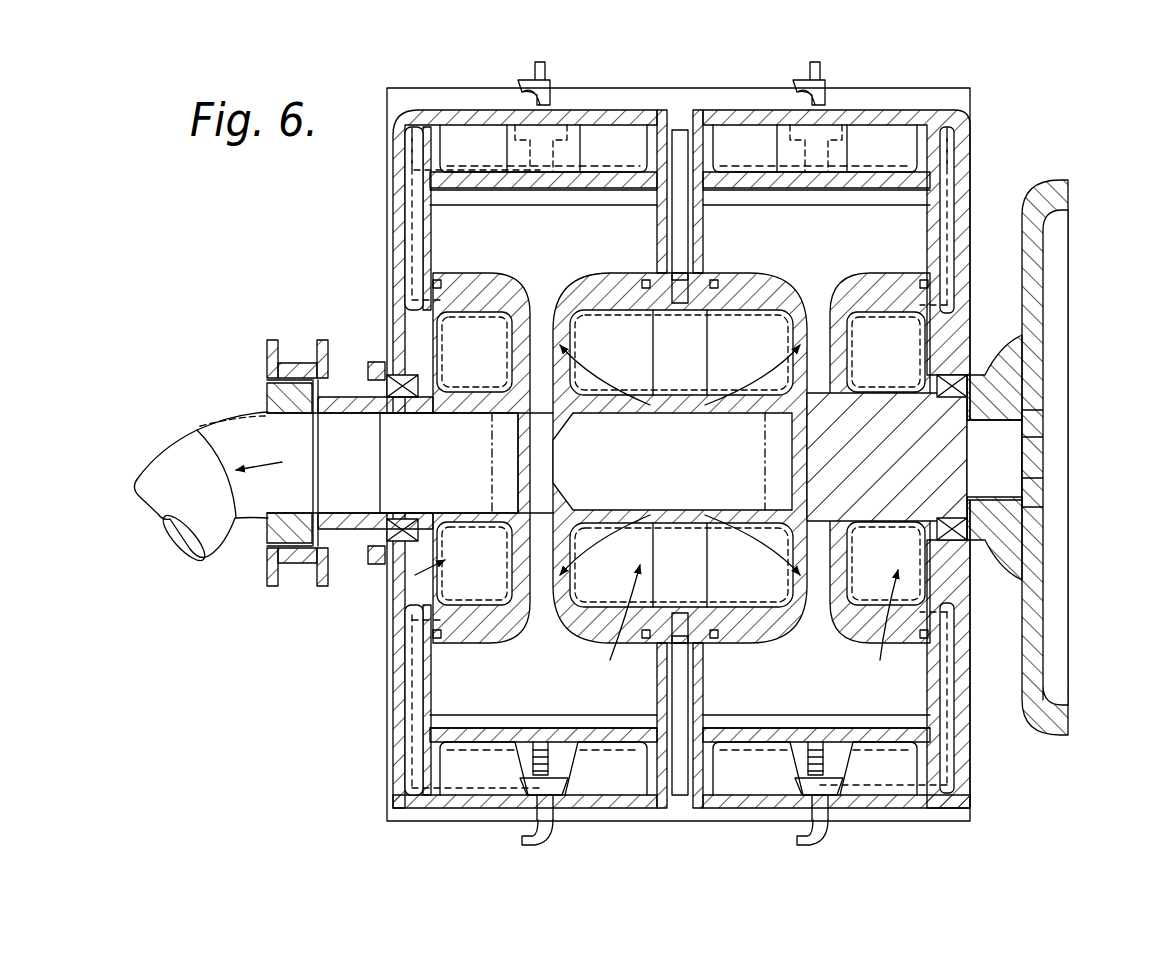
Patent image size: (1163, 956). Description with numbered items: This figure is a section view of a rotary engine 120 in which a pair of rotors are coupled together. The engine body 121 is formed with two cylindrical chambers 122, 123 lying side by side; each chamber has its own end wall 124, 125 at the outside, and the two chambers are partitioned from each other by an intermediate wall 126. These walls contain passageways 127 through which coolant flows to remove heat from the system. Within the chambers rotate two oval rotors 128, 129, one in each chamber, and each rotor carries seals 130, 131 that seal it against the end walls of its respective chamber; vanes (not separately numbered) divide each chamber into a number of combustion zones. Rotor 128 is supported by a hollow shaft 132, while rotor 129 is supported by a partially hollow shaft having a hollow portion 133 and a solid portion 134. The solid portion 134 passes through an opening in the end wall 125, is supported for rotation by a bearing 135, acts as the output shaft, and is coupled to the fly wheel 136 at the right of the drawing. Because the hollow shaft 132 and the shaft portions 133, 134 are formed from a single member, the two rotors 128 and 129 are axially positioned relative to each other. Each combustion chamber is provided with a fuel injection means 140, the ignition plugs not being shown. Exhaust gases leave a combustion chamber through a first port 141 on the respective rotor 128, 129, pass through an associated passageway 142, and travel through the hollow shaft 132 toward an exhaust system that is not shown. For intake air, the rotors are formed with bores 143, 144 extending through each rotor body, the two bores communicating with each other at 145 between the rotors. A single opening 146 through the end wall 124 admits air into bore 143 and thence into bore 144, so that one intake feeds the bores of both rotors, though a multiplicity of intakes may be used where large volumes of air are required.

The rotary engine 120 is at (463, 86).
The engine body 121 is at (622, 108).
The cylindrical chamber 122 is at (455, 220).
The cylindrical chamber 123 is at (855, 268).
The end wall 124 is at (388, 215).
The end wall 125 is at (968, 135).
The intermediate wall 126 is at (681, 124).
The passageways 127 is at (708, 118).
The oval rotor 128 is at (522, 347).
The oval rotor 129 is at (848, 630).
The seals 130 is at (433, 282).
The seals 131 is at (715, 285).
The hollow shaft 132 is at (323, 590).
The hollow portion 133 is at (682, 510).
The solid portion 134 is at (918, 476).
The bearing 135 is at (960, 378).
The fly wheel 136 is at (1043, 330).
The fuel injection means 140 is at (520, 842).
The first port 141 is at (545, 268).
The passageway 142 is at (610, 395).
The bore 143 is at (410, 585).
The bore 144 is at (882, 637).
The communication 145 is at (615, 635).
The opening 146 is at (385, 362).